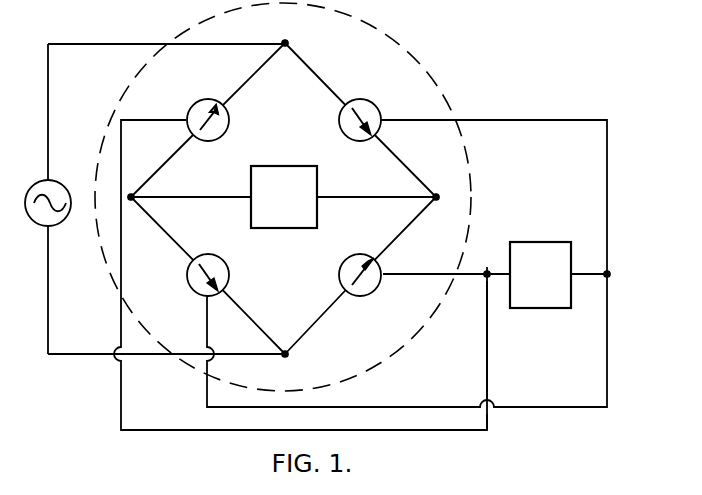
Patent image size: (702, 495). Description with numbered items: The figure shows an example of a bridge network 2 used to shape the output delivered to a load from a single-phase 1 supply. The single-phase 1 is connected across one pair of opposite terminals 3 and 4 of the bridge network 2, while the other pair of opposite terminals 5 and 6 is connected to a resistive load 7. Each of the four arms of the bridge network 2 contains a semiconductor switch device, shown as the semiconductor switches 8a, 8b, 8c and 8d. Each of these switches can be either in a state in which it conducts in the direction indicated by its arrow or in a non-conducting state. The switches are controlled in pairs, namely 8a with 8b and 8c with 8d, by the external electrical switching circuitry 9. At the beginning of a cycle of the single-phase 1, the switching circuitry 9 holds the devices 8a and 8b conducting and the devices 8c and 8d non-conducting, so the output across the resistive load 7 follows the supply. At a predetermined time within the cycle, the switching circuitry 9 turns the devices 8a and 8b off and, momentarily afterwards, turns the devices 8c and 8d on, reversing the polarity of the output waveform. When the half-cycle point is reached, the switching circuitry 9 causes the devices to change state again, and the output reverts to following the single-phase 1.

The single-phase 1 is at (53, 180).
The bridge network 2 is at (470, 94).
The terminal 3 is at (290, 44).
The terminal 4 is at (289, 356).
The terminal 5 is at (189, 197).
The terminal 6 is at (438, 201).
The resistive load 7 is at (275, 212).
The semiconductor switch device 8a is at (375, 105).
The semiconductor switch device 8b is at (229, 267).
The semiconductor switch device 8c is at (229, 118).
The semiconductor switch device 8d is at (339, 279).
The external electrical switching circuitry 9 is at (531, 290).